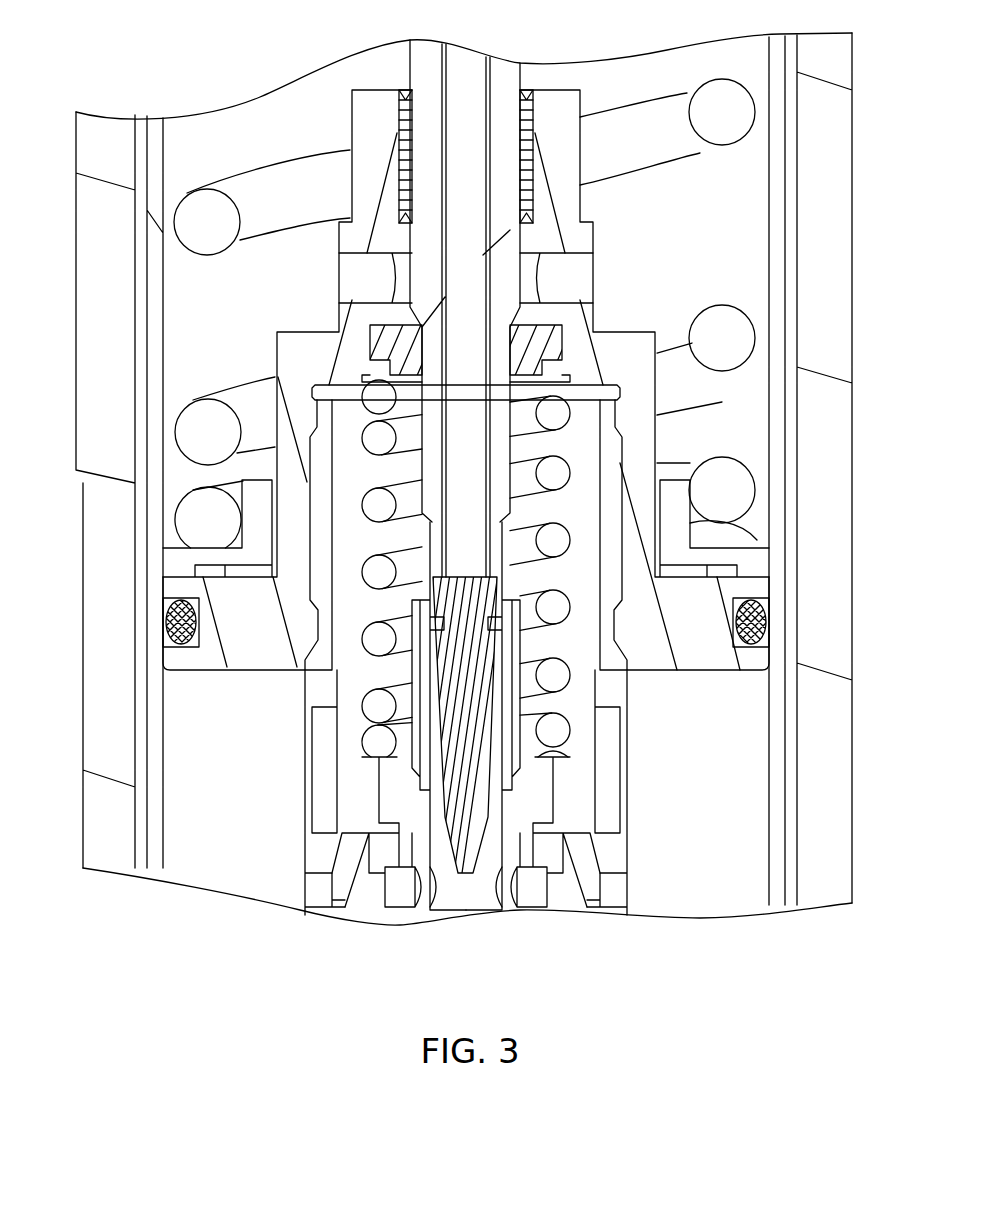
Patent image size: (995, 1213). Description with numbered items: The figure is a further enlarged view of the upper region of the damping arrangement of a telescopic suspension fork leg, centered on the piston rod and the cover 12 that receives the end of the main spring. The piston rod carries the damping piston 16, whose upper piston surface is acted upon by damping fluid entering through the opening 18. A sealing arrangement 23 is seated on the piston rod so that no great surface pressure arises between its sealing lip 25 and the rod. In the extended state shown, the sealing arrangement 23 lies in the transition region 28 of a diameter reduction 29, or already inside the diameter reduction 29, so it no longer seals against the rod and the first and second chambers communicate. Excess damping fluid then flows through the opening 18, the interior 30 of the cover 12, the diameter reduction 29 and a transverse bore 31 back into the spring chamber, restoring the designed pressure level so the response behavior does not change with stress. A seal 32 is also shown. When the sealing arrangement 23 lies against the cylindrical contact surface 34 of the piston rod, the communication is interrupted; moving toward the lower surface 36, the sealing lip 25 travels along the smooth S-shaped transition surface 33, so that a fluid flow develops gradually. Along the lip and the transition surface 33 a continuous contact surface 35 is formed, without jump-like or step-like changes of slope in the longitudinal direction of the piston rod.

The cover 12 is at (657, 397).
The damping piston 16 is at (583, 852).
The opening 18 is at (620, 730).
The sealing arrangement 23 is at (523, 347).
The sealing lip 25 is at (524, 330).
The transition region 28 is at (580, 387).
The diameter reduction 29 is at (413, 347).
The interior 30 is at (590, 448).
The transverse bore 31 is at (358, 280).
The seal 32 is at (763, 613).
The transition surface 33 is at (370, 358).
The contact surface 34 is at (523, 78).
The contact surface 35 is at (523, 360).
The surface 36 is at (320, 478).